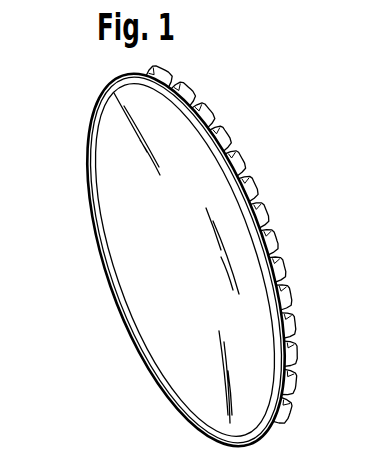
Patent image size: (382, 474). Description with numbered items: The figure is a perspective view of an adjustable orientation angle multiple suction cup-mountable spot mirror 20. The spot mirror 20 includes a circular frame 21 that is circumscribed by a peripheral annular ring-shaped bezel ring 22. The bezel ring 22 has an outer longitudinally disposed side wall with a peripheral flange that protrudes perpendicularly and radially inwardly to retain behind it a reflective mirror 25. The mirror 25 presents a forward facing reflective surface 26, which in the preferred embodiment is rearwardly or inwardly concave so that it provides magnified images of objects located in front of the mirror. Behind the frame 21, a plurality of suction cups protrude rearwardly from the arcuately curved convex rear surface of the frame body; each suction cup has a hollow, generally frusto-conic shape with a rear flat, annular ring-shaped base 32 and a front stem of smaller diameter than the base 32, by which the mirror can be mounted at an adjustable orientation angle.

The adjustable orientation angle suction cup-mountable spot mirror 20 is at (228, 113).
The circular frame 21 is at (93, 109).
The bezel ring 22 is at (181, 413).
The reflective mirror 25 is at (172, 293).
The reflective surface 26 is at (188, 253).
The base 32 is at (273, 290).